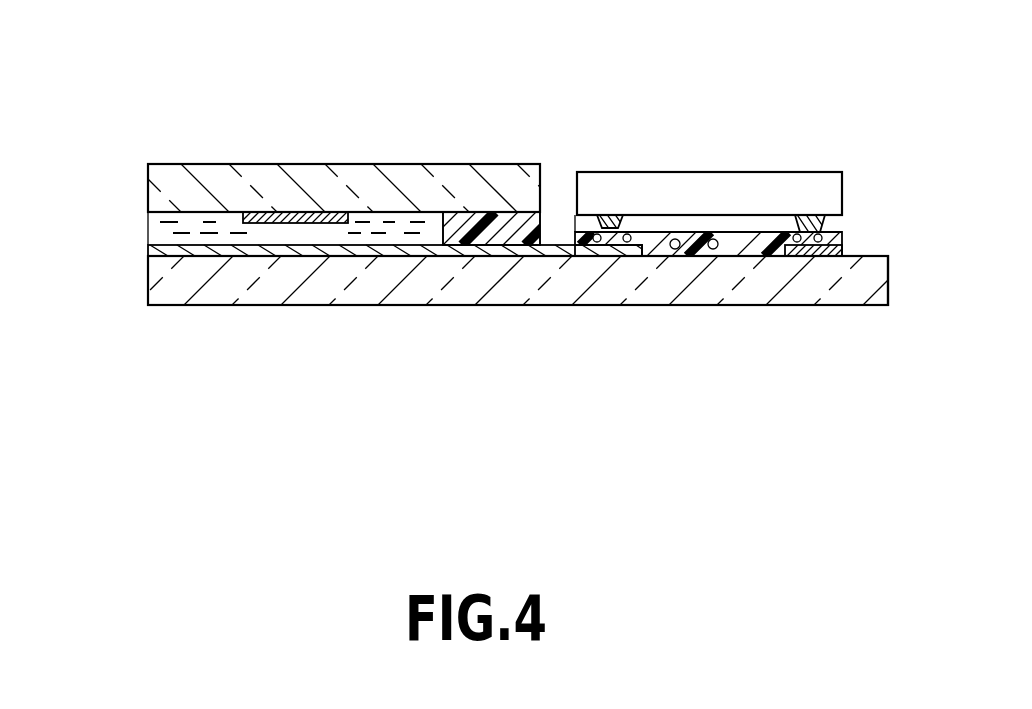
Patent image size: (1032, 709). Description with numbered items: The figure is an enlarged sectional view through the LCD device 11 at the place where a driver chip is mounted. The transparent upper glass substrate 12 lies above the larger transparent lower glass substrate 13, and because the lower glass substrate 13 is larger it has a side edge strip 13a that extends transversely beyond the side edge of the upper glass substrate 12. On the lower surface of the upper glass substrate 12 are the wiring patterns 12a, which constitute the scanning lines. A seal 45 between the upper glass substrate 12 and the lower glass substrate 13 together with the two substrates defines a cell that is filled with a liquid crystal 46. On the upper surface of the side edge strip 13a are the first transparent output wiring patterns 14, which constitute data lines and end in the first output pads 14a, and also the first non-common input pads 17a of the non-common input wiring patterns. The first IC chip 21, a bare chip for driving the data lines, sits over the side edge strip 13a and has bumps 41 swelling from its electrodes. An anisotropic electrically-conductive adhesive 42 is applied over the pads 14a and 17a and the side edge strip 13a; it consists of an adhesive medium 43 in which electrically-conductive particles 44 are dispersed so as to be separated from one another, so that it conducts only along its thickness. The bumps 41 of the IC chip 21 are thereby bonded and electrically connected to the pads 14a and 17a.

The LCD device 11 is at (126, 166).
The upper glass substrate 12 is at (350, 168).
The wiring patterns 12a is at (282, 212).
The lower glass substrate 13 is at (345, 295).
The side edge strip 13a is at (700, 268).
The first transparent output wiring patterns 14 is at (480, 272).
The first output pads 14a is at (602, 256).
The first non-common input pads 17a is at (824, 258).
The first IC chip 21 is at (699, 158).
The bumps 41 is at (615, 213).
The anisotropic electrically-conductive adhesive 42 is at (747, 218).
The adhesive medium 43 is at (768, 256).
The electrically-conductive particles 44 is at (580, 222).
The seal 45 is at (503, 212).
The liquid crystal 46 is at (417, 222).